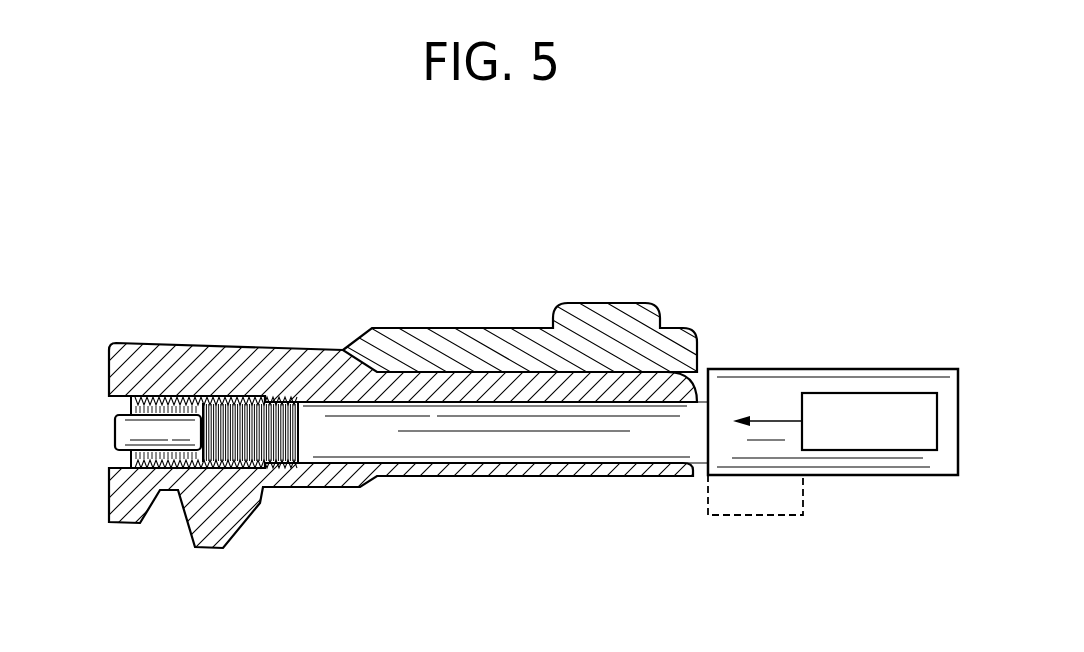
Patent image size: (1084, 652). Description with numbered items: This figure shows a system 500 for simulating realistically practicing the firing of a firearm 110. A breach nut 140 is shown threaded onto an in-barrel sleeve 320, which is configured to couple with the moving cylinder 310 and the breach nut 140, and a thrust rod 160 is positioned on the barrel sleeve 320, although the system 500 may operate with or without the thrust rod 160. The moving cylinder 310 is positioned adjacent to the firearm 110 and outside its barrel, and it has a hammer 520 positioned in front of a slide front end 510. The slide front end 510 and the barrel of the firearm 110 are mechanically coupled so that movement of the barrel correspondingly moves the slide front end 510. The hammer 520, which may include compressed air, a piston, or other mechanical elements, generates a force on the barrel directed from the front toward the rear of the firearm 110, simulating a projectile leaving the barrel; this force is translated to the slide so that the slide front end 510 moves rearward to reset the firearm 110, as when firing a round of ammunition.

The system 500 is at (288, 213).
The firearm 110 is at (430, 370).
The breach nut 140 is at (163, 392).
The thrust rod 160 is at (118, 450).
The in-barrel sleeve 320 is at (458, 465).
The slide front end 510 is at (704, 371).
The hammer 520 is at (891, 434).
The moving cylinder 310 is at (825, 498).